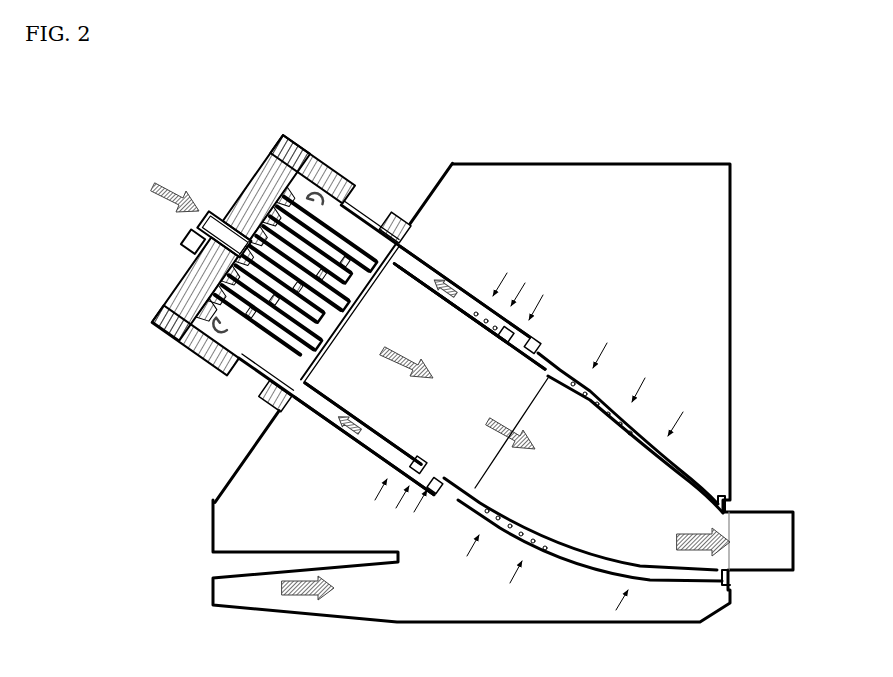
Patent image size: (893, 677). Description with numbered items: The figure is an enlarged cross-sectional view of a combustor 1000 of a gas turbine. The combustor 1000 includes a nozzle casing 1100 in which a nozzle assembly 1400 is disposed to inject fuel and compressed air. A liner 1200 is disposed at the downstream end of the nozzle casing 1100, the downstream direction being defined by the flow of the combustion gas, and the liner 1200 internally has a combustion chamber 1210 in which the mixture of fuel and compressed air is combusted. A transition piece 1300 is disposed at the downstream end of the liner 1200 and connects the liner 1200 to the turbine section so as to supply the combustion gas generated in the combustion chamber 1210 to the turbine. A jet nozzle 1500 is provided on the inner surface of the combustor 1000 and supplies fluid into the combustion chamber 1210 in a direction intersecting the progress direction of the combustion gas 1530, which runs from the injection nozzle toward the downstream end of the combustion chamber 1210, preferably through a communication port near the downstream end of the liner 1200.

The combustor 1000 is at (171, 140).
The nozzle casing 1100 is at (330, 172).
The liner 1200 is at (476, 280).
The combustion chamber 1210 is at (430, 311).
The transition piece 1300 is at (645, 406).
The nozzle assembly 1400 is at (230, 347).
The jet nozzle 1500 is at (430, 447).
The progress direction of the combustion gas 1530 is at (514, 346).